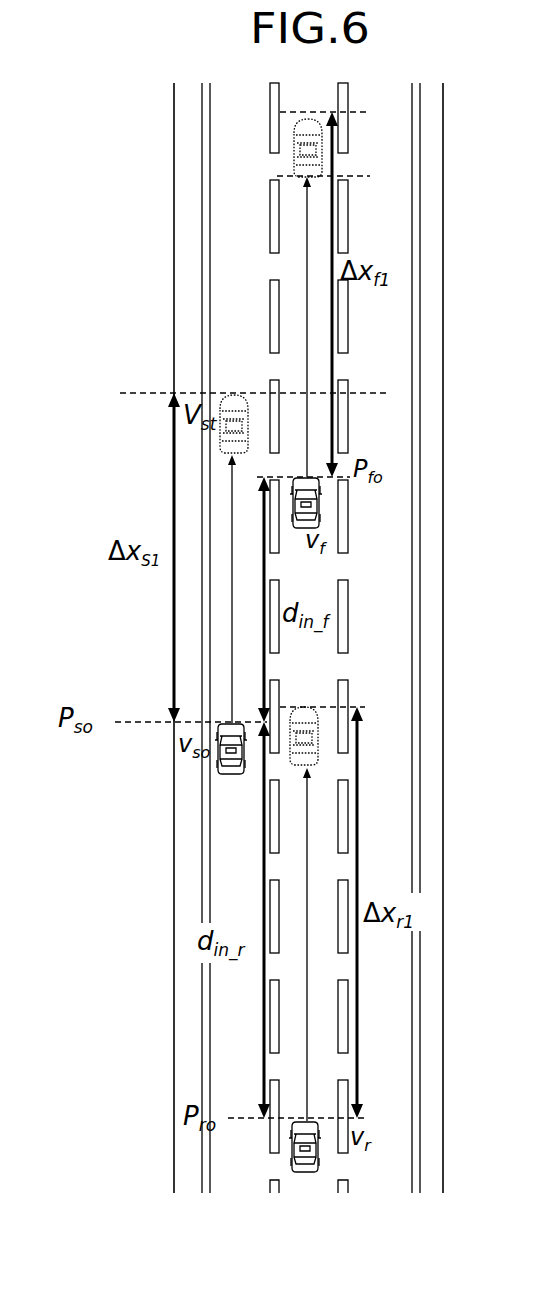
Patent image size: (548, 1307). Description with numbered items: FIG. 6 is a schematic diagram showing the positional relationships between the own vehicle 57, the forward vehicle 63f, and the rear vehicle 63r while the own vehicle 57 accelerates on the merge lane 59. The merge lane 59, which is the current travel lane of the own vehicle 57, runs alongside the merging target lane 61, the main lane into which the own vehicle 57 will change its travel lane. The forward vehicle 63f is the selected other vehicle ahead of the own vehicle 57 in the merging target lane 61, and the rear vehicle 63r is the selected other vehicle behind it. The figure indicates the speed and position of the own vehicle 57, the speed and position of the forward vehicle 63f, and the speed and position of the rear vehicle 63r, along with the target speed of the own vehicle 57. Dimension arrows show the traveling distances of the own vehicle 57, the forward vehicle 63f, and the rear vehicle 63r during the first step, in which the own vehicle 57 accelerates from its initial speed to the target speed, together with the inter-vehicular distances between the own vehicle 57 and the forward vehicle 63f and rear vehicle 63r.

The own vehicle 57 is at (237, 393).
The merge lane 59 is at (237, 1183).
The merging target lane 61 is at (305, 1183).
The forward vehicle 63f is at (294, 158).
The rear vehicle 63r is at (302, 707).